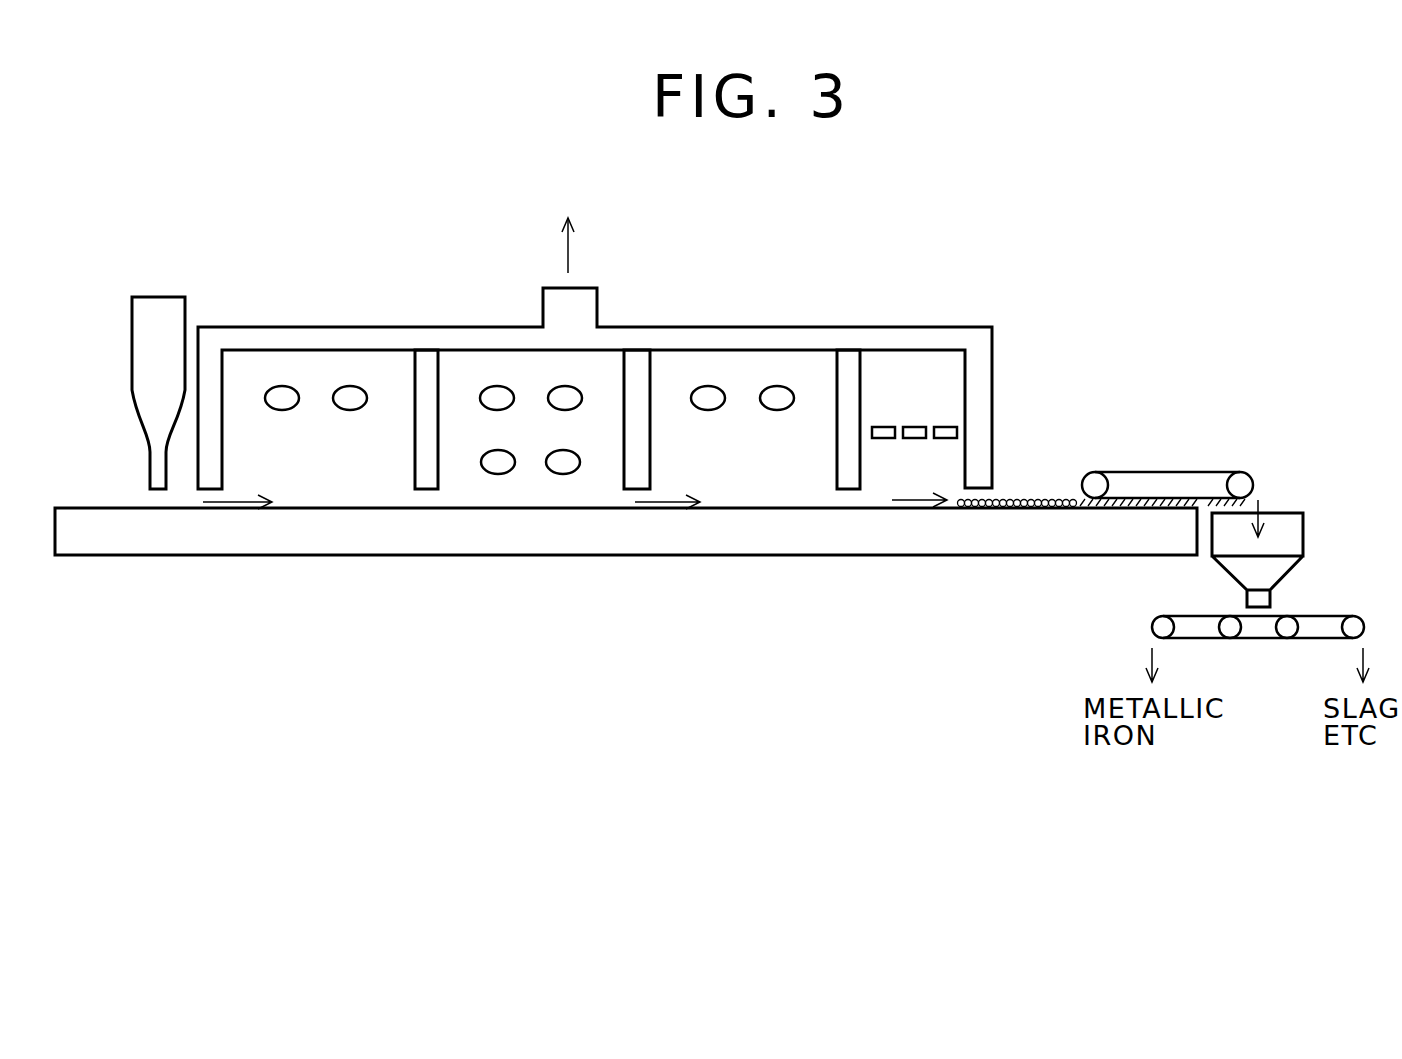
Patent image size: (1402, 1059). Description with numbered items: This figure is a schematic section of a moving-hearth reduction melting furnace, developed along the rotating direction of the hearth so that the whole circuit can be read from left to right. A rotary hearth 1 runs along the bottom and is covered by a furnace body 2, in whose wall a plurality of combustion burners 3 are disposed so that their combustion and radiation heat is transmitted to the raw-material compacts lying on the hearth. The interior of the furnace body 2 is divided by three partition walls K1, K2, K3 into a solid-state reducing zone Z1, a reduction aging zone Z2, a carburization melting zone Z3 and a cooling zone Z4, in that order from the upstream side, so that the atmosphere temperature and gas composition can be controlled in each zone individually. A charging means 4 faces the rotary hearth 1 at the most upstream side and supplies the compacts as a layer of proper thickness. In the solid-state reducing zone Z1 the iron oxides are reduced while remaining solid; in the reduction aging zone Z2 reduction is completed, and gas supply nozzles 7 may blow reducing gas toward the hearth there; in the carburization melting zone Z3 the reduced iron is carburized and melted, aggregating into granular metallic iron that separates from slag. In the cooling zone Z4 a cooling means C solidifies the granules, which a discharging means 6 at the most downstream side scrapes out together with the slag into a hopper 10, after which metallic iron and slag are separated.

The rotary hearth 1 is at (378, 540).
The furnace body 2 is at (980, 333).
The combustion burners 3 is at (283, 405).
The charging means 4 is at (163, 317).
The discharging means 6 is at (1170, 448).
The gas supply nozzles 7 is at (565, 466).
The receiving hopper 10 is at (1293, 530).
The cooling means C is at (945, 427).
The partition wall K1 is at (423, 363).
The partition wall K2 is at (637, 363).
The partition wall K3 is at (848, 362).
The solid-state reducing zone Z1 is at (324, 497).
The reduction aging zone Z2 is at (483, 445).
The carburization melting zone Z3 is at (783, 492).
The cooling zone Z4 is at (884, 484).